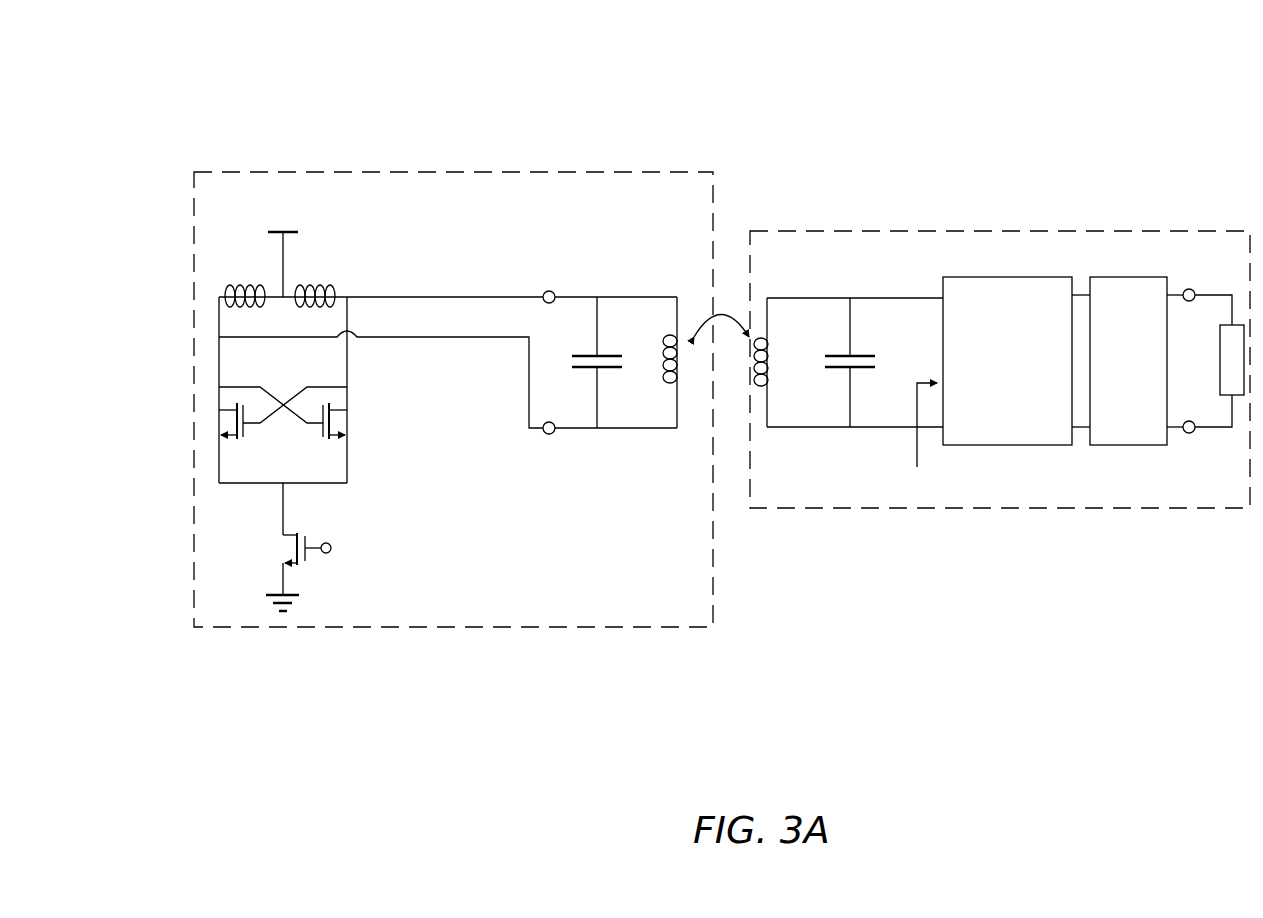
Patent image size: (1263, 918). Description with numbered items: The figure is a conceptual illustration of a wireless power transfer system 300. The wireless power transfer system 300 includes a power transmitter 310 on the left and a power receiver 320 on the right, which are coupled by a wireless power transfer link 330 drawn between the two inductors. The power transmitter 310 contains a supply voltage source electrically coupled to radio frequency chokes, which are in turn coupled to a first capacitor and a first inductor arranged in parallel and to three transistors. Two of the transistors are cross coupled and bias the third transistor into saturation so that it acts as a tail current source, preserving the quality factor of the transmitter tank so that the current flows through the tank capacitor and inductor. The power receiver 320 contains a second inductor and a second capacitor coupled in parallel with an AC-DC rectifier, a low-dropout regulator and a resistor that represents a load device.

The wireless power transfer system 300 is at (1160, 102).
The power transmitter 310 is at (470, 172).
The power receiver 320 is at (1010, 231).
The wireless power transfer link 330 is at (724, 290).